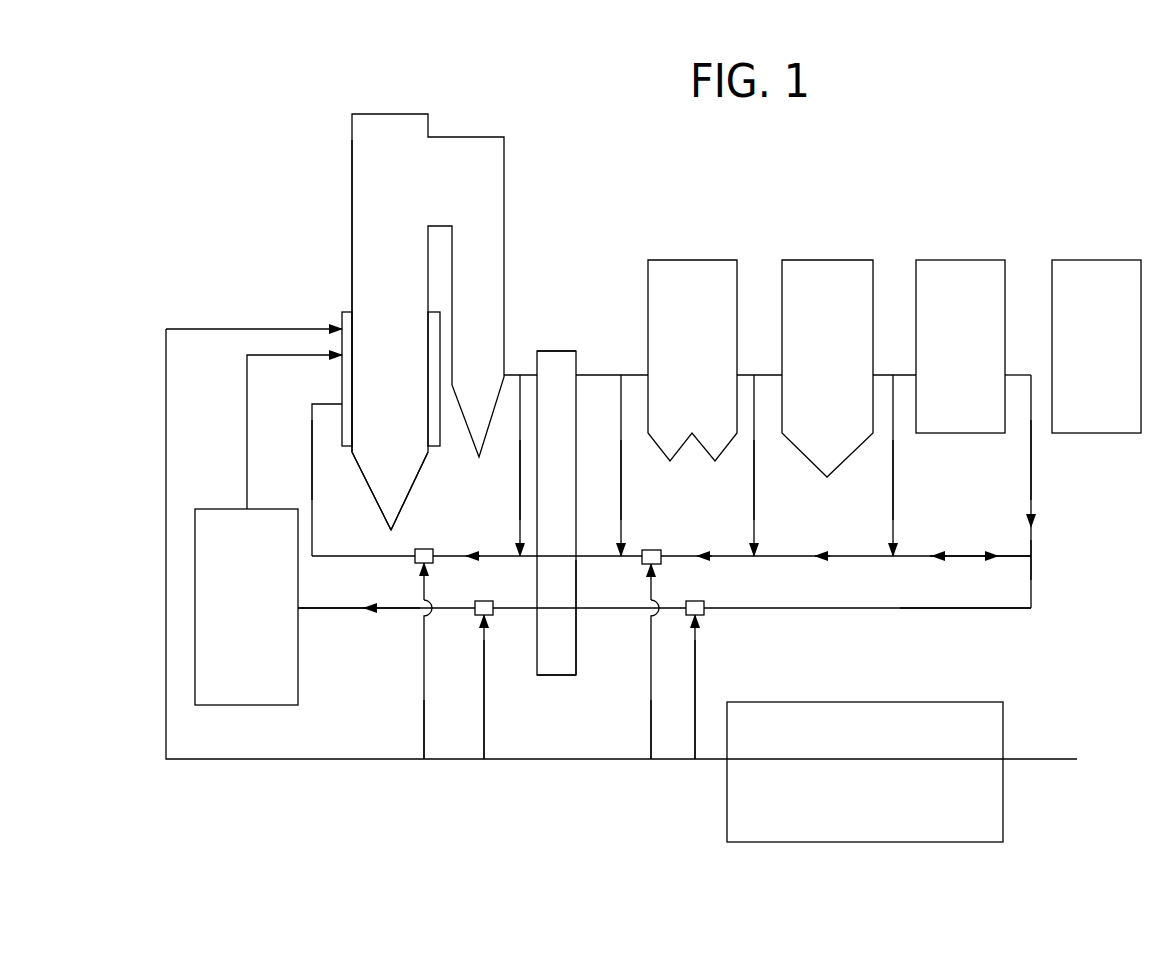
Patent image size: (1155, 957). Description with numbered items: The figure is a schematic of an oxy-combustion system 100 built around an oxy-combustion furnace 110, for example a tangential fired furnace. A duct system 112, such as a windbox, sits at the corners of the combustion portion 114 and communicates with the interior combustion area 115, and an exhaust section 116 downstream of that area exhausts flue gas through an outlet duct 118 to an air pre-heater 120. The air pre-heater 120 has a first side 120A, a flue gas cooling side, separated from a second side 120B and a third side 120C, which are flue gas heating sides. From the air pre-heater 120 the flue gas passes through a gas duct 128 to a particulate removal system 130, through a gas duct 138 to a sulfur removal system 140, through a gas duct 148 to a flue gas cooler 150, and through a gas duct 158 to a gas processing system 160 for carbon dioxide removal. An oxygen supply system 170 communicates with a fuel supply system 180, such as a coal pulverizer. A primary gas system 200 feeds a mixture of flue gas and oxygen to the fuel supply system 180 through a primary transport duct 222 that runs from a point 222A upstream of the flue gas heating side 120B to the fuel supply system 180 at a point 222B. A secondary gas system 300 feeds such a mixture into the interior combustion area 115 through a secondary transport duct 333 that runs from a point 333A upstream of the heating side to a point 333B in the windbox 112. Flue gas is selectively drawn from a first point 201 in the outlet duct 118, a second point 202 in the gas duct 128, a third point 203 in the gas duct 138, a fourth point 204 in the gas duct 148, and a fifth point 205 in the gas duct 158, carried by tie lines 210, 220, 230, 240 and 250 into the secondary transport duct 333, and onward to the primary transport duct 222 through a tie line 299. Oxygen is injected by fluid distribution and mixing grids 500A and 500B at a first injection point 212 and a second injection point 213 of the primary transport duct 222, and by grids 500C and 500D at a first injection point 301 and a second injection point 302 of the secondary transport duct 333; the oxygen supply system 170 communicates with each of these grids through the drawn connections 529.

The oxy-combustion system 100 is at (1066, 189).
The oxy-combustion furnace 110 is at (483, 157).
The duct system 112 is at (343, 311).
The combustion portion 114 is at (352, 223).
The interior combustion area 115 is at (372, 283).
The exhaust section 116 is at (485, 262).
The outlet duct 118 is at (530, 374).
The air pre-heater 120 is at (552, 351).
The first side 120A is at (560, 362).
The second side 120B is at (546, 638).
The third side 120C is at (574, 617).
The gas duct 128 is at (610, 374).
The particulate removal system 130 is at (697, 259).
The gas duct 138 is at (745, 374).
The sulfur removal system 140 is at (812, 259).
The gas duct 148 is at (880, 374).
The flue gas cooler 150 is at (943, 259).
The gas duct 158 is at (1020, 374).
The gas processing system 160 is at (1097, 259).
The oxygen supply system 170 is at (955, 842).
The fuel supply system 180 is at (247, 706).
The primary gas system 200 is at (775, 627).
The first point 201 is at (520, 378).
The second point 202 is at (619, 377).
The third point 203 is at (745, 385).
The fourth point 204 is at (884, 385).
The fifth point 205 is at (1026, 380).
The tie line 210 is at (518, 510).
The first injection point 212 is at (694, 600).
The second injection point 213 is at (484, 600).
The tie line 220 is at (622, 486).
The primary transport duct 222 is at (947, 611).
The point upstream of flue gas heating side 222A is at (900, 556).
The point at fuel supply system 222B is at (298, 624).
The tie line 230 is at (755, 490).
The tie line 240 is at (895, 525).
The tie line 250 is at (1032, 476).
The tie line 299 is at (955, 560).
The secondary gas system 300 is at (774, 563).
The first injection point 301 is at (652, 548).
The second injection point 302 is at (420, 563).
The secondary transport duct 333 is at (297, 477).
The point upstream of flue gas heating side 333A is at (1035, 556).
The point in windbox 333B is at (342, 402).
The fluid distribution and mixing grid 500A is at (689, 617).
The fluid distribution and mixing grid 500B is at (477, 617).
The fluid distribution and mixing grid 500C is at (641, 565).
The fluid distribution and mixing grid 500D is at (426, 547).
The control signal line 529 is at (423, 677).